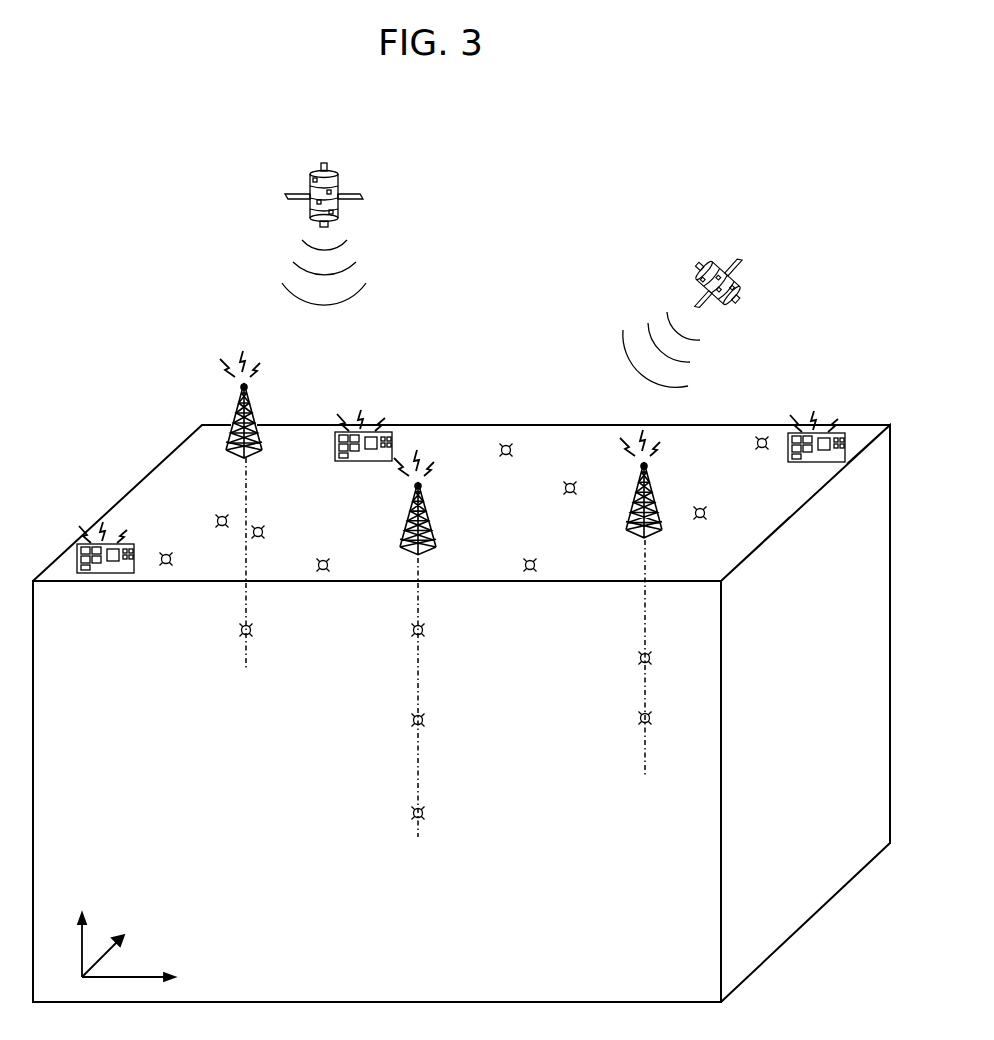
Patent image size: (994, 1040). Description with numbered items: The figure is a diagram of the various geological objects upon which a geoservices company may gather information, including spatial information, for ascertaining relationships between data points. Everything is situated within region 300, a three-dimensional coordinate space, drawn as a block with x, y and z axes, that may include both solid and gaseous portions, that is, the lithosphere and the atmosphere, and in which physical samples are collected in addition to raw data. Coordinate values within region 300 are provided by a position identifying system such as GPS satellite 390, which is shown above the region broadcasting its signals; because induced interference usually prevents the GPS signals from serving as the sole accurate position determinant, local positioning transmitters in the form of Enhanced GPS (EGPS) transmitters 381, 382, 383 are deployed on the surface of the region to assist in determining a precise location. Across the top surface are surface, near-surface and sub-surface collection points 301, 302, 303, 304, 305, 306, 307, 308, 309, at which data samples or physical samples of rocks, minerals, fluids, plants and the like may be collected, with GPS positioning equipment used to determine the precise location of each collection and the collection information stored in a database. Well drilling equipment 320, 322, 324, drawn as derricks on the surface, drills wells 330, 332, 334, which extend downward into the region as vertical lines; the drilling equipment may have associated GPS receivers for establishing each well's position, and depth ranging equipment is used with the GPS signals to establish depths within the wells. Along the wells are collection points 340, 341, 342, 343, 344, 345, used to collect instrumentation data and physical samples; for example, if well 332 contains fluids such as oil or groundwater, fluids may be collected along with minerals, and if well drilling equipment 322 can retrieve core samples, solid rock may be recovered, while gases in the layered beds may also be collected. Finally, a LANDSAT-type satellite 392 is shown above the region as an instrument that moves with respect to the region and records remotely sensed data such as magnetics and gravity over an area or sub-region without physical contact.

The region 300 is at (649, 964).
The collection point 301 is at (177, 559).
The collection point 302 is at (208, 521).
The collection point 303 is at (333, 565).
The collection point 304 is at (267, 532).
The collection point 305 is at (516, 450).
The collection point 306 is at (558, 488).
The collection point 307 is at (540, 565).
The collection point 308 is at (750, 443).
The collection point 309 is at (710, 513).
The well drilling equipment 320 is at (262, 447).
The well drilling equipment 322 is at (437, 518).
The well drilling equipment 324 is at (655, 478).
The well 330 is at (243, 602).
The well 332 is at (415, 602).
The well 334 is at (633, 602).
The collection point 340 is at (257, 630).
The collection point 341 is at (429, 630).
The collection point 342 is at (429, 720).
The collection point 343 is at (429, 813).
The collection point 344 is at (633, 658).
The collection point 345 is at (633, 718).
The Enhanced GPS transmitter 381 is at (128, 629).
The Enhanced GPS transmitter 382 is at (384, 510).
The Enhanced GPS transmitter 383 is at (834, 520).
The GPS satellite 390 is at (345, 176).
The LANDSAT-type satellite 392 is at (745, 268).